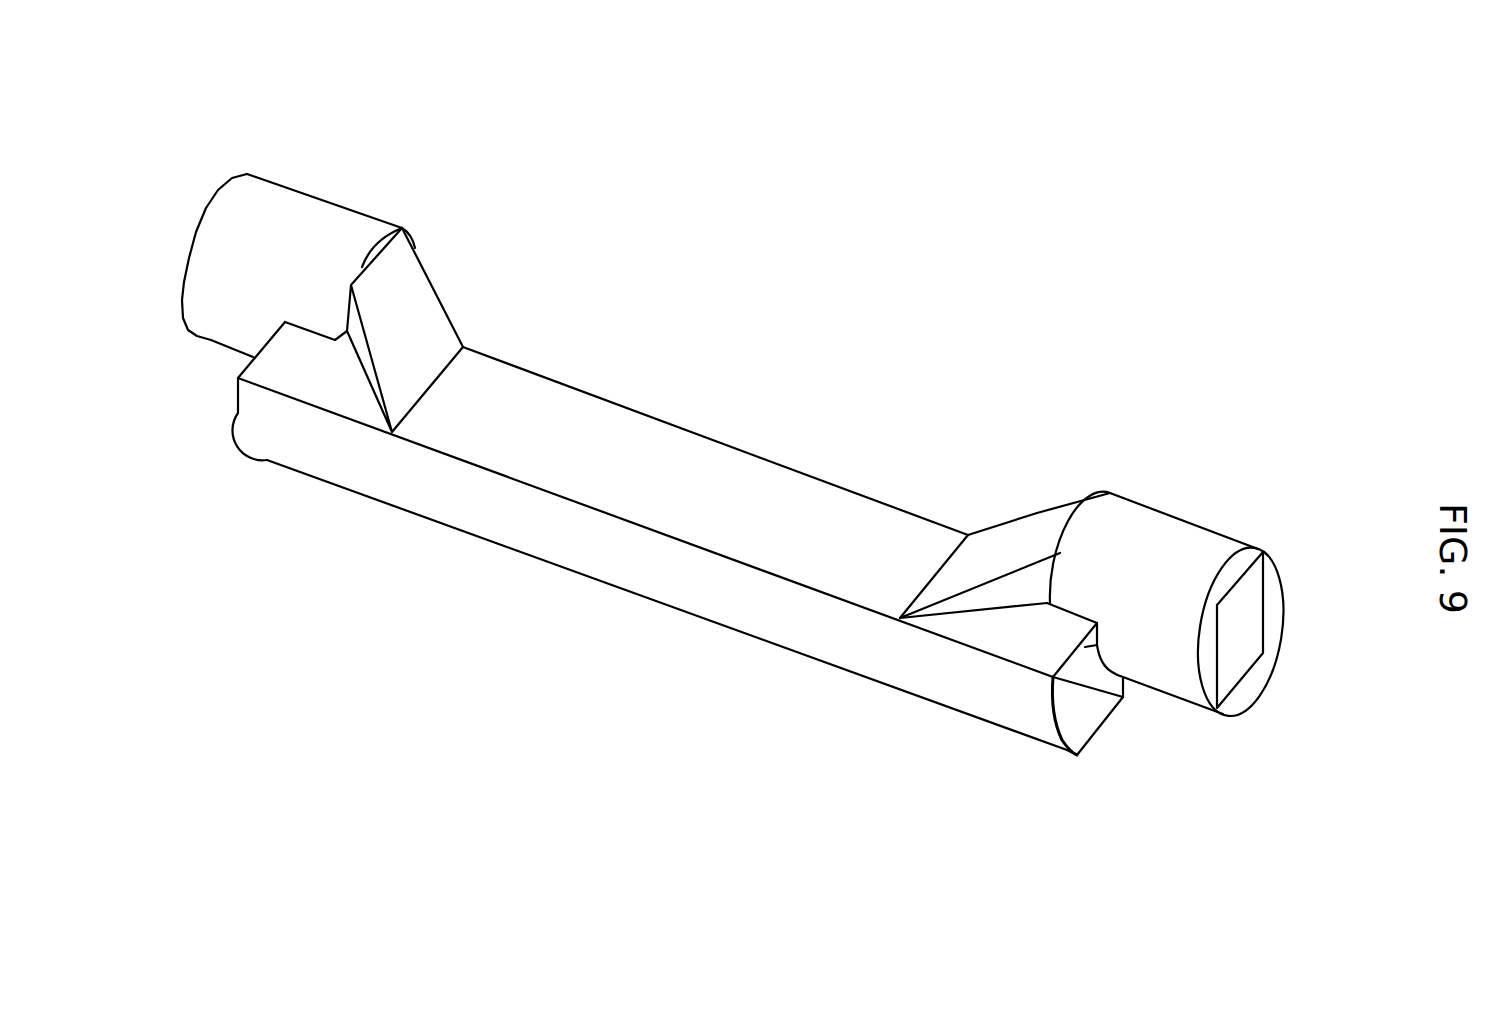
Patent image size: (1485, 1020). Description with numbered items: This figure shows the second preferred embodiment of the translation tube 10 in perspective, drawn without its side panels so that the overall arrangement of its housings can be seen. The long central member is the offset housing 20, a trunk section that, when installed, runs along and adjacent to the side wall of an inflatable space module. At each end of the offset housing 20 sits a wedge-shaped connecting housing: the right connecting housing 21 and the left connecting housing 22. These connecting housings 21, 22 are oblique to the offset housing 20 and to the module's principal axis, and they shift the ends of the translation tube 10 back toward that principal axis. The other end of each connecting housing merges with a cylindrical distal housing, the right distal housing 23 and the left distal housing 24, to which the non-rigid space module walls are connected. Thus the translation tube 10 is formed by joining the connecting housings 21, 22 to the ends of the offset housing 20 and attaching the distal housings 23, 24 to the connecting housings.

The translation tube 10 is at (415, 703).
The offset housing 20 is at (717, 443).
The right connecting housing 21 is at (1033, 515).
The left connecting housing 22 is at (438, 292).
The right distal housing 23 is at (1205, 527).
The left distal housing 24 is at (328, 198).